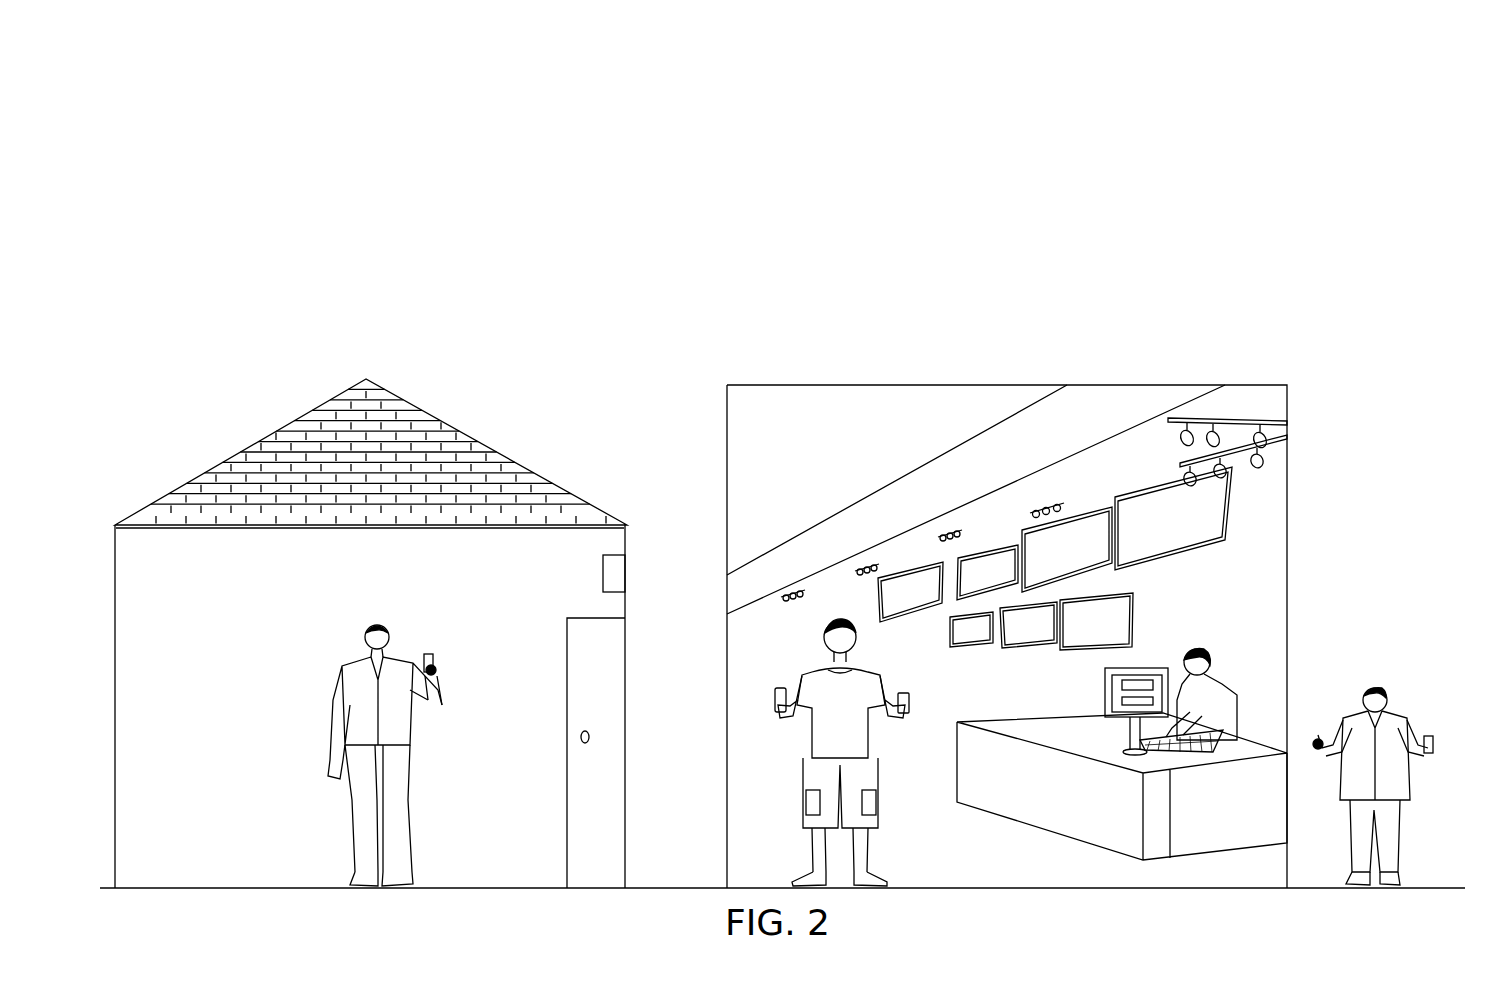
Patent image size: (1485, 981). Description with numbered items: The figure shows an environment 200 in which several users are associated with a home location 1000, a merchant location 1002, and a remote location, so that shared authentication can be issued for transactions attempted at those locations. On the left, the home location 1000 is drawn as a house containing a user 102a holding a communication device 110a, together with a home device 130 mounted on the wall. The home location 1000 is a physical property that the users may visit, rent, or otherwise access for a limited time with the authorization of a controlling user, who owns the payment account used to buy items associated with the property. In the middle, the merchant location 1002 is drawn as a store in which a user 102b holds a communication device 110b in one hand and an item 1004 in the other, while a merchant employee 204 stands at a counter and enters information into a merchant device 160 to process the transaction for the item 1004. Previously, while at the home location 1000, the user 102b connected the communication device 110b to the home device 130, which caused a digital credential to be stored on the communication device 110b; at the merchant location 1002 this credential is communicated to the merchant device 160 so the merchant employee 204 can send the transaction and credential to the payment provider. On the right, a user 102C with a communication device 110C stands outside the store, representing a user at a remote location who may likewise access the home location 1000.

The environment 200 is at (1082, 72).
The home location 1000 is at (402, 322).
The merchant location 1002 is at (1050, 310).
The item 1004 is at (782, 688).
The home device 130 is at (598, 567).
The user 102a is at (337, 718).
The communication device 110a is at (426, 654).
The user 102b is at (820, 740).
The communication device 110b is at (902, 693).
The merchant device 160 is at (1158, 668).
The merchant employee 204 is at (1230, 647).
The user 102C is at (1370, 687).
The communication device 110C is at (1430, 736).